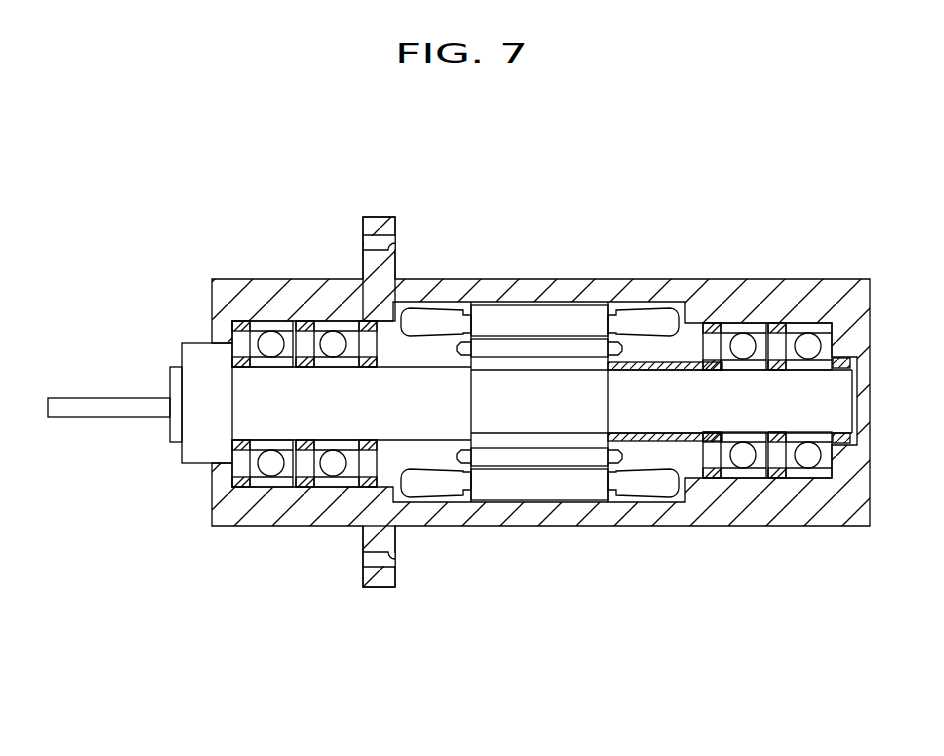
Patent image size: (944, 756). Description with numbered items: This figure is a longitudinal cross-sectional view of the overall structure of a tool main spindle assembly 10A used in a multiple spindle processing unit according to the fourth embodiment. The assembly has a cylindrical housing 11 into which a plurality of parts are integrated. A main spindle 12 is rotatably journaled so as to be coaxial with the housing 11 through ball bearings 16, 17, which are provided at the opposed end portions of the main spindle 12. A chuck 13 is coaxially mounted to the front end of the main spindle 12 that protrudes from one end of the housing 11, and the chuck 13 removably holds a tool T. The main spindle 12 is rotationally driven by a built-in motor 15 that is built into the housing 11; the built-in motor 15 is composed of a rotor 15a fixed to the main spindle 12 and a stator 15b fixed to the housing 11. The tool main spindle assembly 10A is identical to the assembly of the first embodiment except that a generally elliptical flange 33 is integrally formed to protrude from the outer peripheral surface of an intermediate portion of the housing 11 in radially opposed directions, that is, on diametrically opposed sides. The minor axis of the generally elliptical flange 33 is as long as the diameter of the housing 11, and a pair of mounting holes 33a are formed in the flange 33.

The tool main spindle assembly 10A is at (613, 272).
The housing 11 is at (548, 287).
The main spindle 12 is at (440, 392).
The chuck 13 is at (203, 450).
The built-in motor 15 is at (540, 457).
The rotor 15a is at (593, 457).
The stator 15b is at (553, 483).
The ball bearing 16 is at (278, 326).
The ball bearing 17 is at (741, 327).
The flange 33 is at (386, 380).
The mounting hole 33a is at (396, 246).
The tool T is at (93, 408).